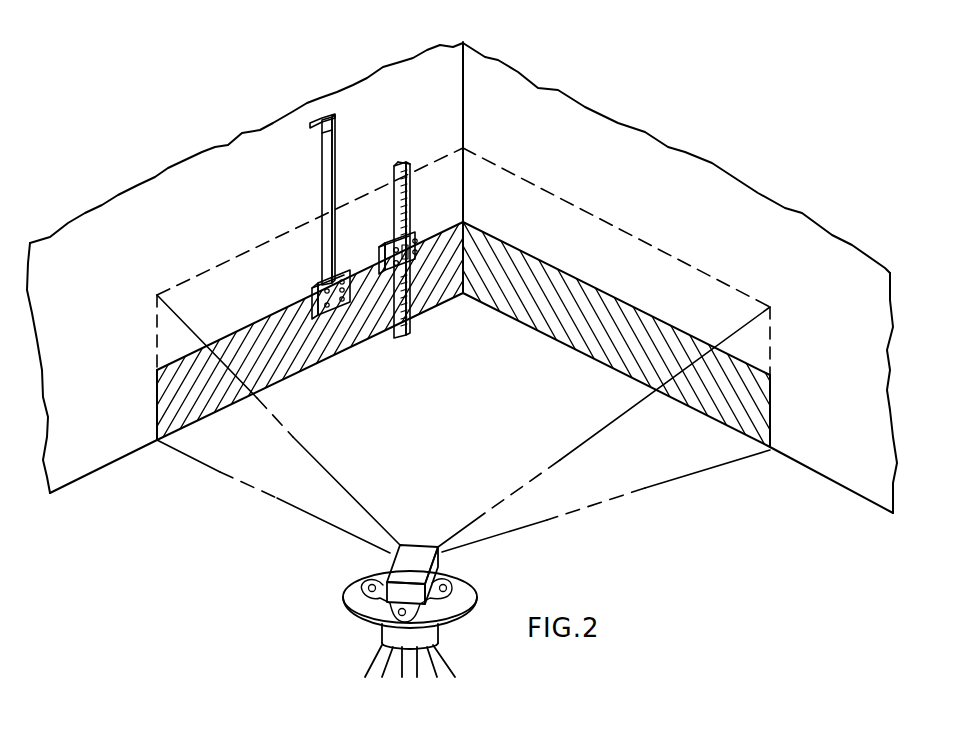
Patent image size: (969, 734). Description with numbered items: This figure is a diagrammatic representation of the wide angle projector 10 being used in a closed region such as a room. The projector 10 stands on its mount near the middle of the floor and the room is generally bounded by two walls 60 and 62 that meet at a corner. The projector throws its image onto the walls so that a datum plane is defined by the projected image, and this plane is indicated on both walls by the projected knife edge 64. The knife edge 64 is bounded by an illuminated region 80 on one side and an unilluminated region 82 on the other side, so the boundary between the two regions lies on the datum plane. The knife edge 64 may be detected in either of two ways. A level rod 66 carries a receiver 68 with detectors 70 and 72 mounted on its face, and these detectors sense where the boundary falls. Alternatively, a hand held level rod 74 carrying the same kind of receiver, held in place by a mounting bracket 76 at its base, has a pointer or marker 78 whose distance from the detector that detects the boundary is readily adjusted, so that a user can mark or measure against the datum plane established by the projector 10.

The laser beam projecting instrument 10 is at (442, 563).
The wall 60 is at (214, 218).
The wall 62 is at (646, 205).
The projected knife edge 64 is at (150, 369).
The level rod 66 is at (408, 159).
The receiver 68 is at (417, 233).
The detector 70 is at (392, 249).
The detector 72 is at (392, 263).
The hand held level rod 74 is at (337, 153).
The mounting bracket 76 is at (312, 291).
The pointer or marker 78 is at (310, 123).
The illuminated region 80 is at (224, 307).
The unilluminated region 82 is at (252, 365).